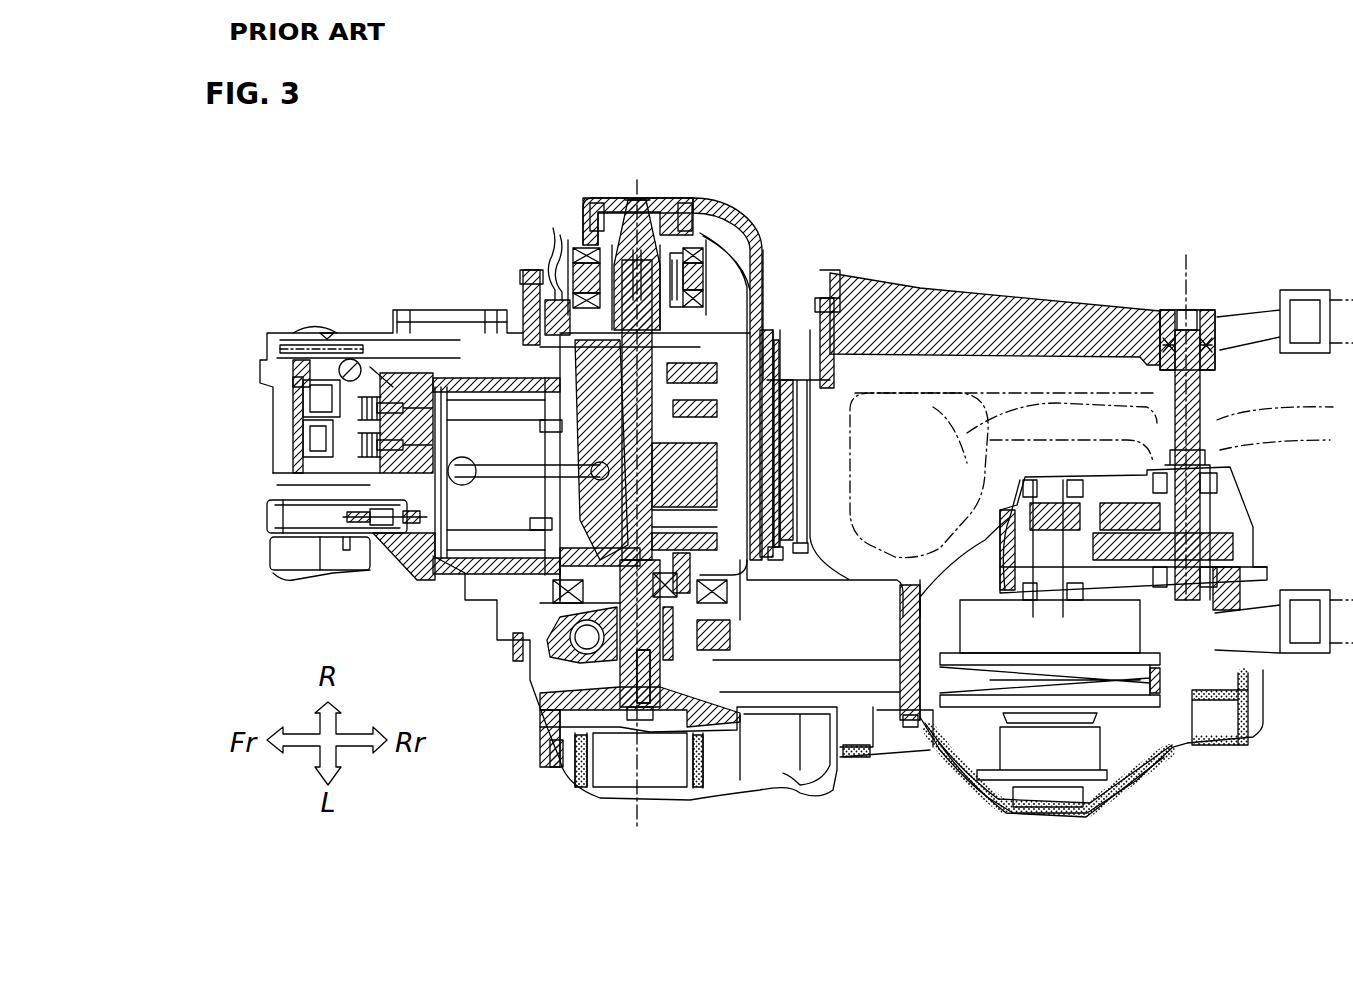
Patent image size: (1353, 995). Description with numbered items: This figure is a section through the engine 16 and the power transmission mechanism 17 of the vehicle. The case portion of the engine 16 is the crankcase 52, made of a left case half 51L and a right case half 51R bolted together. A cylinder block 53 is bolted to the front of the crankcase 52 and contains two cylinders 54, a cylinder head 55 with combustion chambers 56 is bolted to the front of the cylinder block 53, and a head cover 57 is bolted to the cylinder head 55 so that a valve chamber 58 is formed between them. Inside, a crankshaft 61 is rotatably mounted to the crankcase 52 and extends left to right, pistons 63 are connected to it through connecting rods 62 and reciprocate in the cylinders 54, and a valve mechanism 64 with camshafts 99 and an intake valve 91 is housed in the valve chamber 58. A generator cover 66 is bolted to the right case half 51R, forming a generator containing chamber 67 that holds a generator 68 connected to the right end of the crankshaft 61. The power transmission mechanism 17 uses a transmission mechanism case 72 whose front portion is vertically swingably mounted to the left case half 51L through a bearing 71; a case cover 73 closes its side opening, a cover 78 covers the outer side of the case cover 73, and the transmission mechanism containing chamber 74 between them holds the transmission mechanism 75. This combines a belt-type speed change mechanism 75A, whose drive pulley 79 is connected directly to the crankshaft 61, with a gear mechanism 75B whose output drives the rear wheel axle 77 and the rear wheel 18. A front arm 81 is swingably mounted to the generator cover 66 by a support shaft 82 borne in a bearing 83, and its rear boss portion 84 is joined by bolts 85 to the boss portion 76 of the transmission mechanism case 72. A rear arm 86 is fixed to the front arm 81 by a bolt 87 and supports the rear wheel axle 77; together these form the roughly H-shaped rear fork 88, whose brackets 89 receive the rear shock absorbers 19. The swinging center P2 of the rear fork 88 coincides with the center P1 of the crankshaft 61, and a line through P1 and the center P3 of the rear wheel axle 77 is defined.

The engine 16 is at (368, 246).
The power transmission mechanism 17 is at (563, 783).
The rear wheel 18 is at (1010, 393).
The rear shock absorbers 19 is at (1323, 287).
The right case half 51R is at (767, 310).
The left case half 51L is at (727, 560).
The crankcase 52 is at (780, 380).
The cylinder block 53 is at (497, 307).
The cylinders 54 is at (520, 350).
The cylinder head 55 is at (370, 330).
The combustion chambers 56 is at (470, 387).
The head cover 57 is at (292, 328).
The valve chamber 58 is at (297, 475).
The crankshaft 61 is at (652, 430).
The connecting rods 62 is at (533, 423).
The pistons 63 is at (477, 447).
The valve mechanism 64 is at (307, 450).
The generator cover 66 is at (707, 250).
The generator containing chamber 67 is at (553, 300).
The generator 68 is at (575, 258).
The bearing 71 is at (737, 603).
The transmission mechanism case 72 is at (507, 637).
The case cover 73 is at (540, 730).
The transmission mechanism containing chamber 74 is at (855, 690).
The transmission mechanism 75 is at (1337, 763).
The belt-type speed change mechanism 75A is at (1117, 715).
The gear mechanism 75B is at (1197, 707).
The boss portion 76 is at (810, 490).
The rear wheel axle 77 is at (1190, 393).
The cover 78 is at (757, 780).
The drive pulley 79 is at (530, 700).
The front arm 81 is at (762, 265).
The support shaft 82 is at (627, 197).
The bearing 83 is at (707, 247).
The boss portion 84 is at (817, 387).
The bolts 85 is at (750, 570).
The rear arm 86 is at (1087, 317).
The bolt 87 is at (921, 293).
The rear fork 88 is at (1055, 285).
The brackets 89 is at (1288, 313).
The intake valve 91 is at (422, 345).
The camshafts 99 is at (317, 395).
The center of the crankshaft P1 is at (650, 485).
The swinging center of the rear fork P2 is at (640, 813).
The center of the rear wheel axle P3 is at (1187, 263).